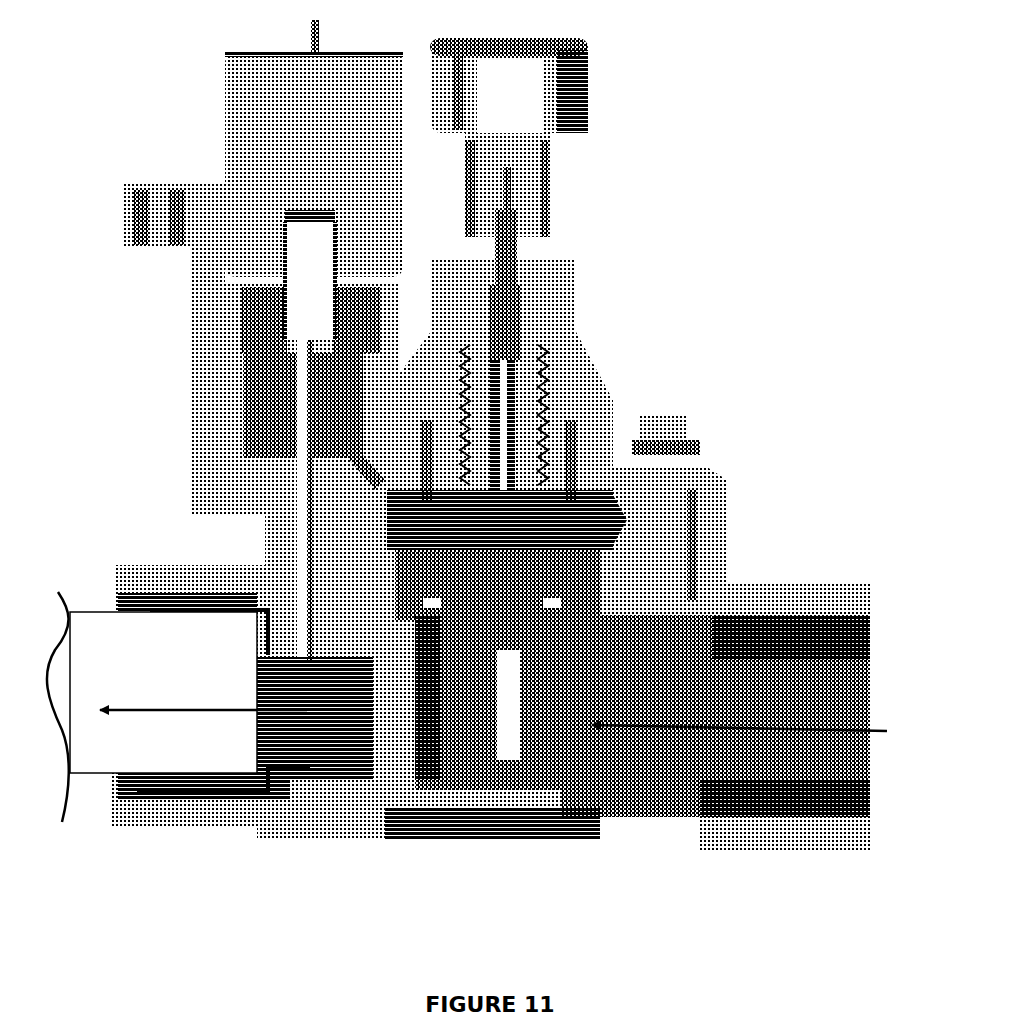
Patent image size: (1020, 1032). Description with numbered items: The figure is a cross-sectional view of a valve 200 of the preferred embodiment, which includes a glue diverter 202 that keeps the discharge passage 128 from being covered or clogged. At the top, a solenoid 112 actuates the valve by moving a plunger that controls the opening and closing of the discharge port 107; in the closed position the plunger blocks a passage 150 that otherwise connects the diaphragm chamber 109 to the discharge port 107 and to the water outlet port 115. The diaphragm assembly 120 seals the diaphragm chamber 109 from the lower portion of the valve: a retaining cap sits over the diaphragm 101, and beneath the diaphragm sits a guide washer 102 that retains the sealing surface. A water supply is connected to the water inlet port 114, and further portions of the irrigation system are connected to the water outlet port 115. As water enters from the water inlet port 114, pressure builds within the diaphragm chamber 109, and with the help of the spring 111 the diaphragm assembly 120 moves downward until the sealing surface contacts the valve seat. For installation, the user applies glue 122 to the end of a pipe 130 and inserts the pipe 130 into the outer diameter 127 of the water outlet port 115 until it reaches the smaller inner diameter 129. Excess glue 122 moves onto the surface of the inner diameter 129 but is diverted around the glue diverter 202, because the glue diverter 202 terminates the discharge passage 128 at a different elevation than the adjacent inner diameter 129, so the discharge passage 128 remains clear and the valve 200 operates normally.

The solenoid 112 is at (245, 128).
The discharge port 107 is at (297, 452).
The passage 150 is at (370, 463).
The diaphragm assembly 120 is at (338, 543).
The discharge passage 128 is at (297, 558).
The glue diverter 202 is at (322, 647).
The inner diameter 129 is at (318, 780).
The pipe 130 is at (92, 608).
The glue 122 is at (242, 797).
The water outlet port 115 is at (105, 812).
The outer diameter 127 is at (182, 833).
The valve 200 is at (710, 232).
The spring 111 is at (573, 503).
The diaphragm chamber 109 is at (615, 512).
The diaphragm 101 is at (622, 527).
The guide washer 102 is at (597, 588).
The water inlet port 114 is at (860, 805).